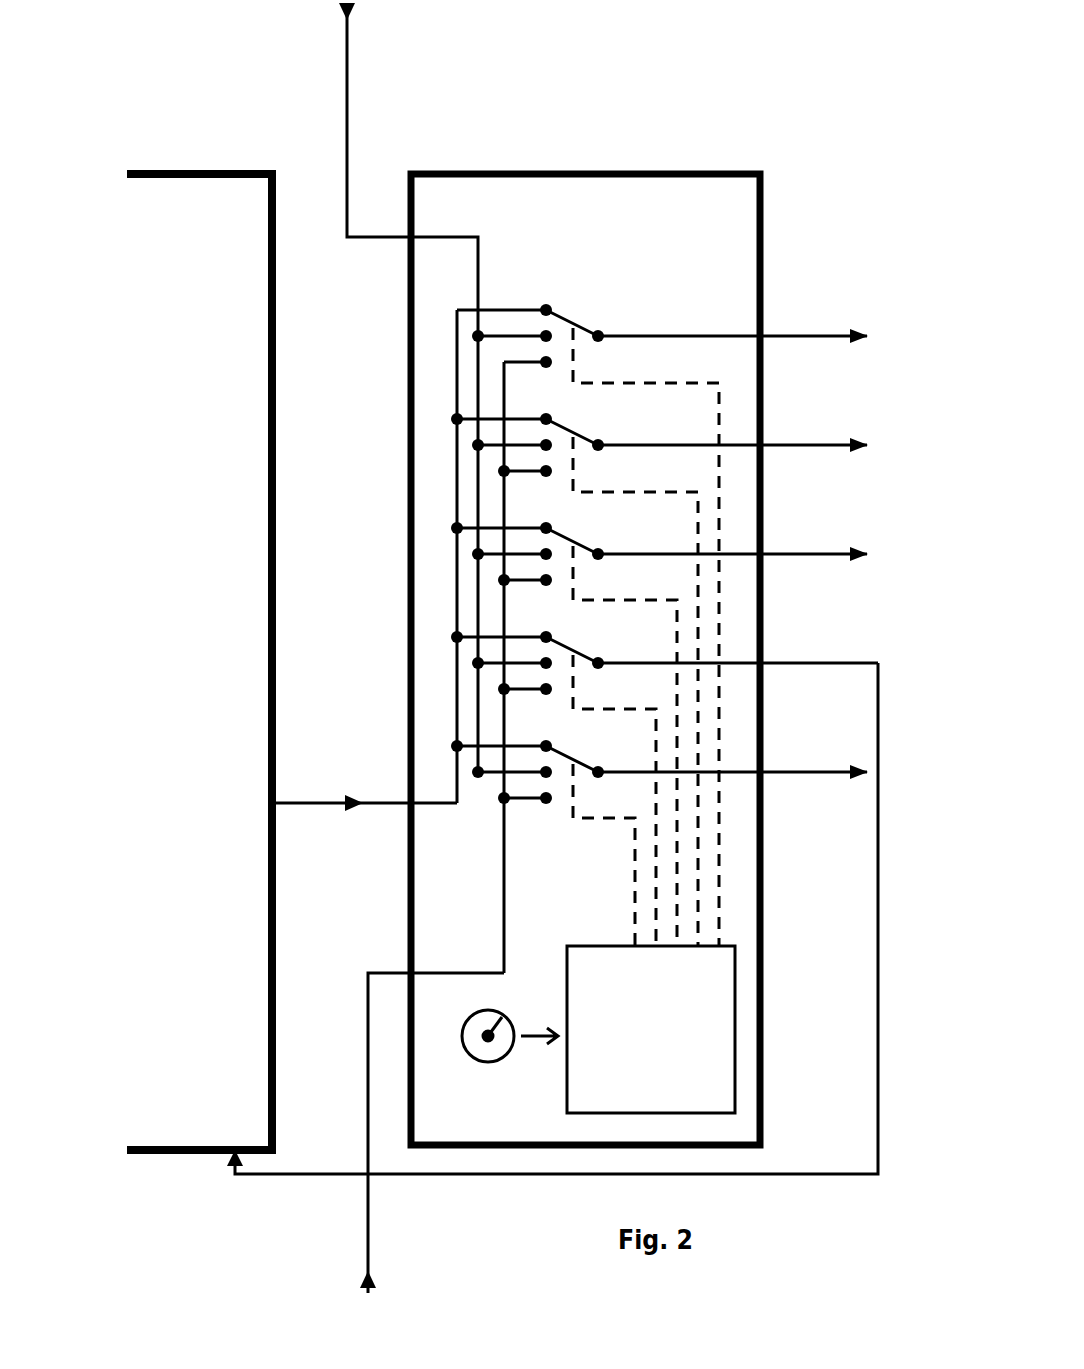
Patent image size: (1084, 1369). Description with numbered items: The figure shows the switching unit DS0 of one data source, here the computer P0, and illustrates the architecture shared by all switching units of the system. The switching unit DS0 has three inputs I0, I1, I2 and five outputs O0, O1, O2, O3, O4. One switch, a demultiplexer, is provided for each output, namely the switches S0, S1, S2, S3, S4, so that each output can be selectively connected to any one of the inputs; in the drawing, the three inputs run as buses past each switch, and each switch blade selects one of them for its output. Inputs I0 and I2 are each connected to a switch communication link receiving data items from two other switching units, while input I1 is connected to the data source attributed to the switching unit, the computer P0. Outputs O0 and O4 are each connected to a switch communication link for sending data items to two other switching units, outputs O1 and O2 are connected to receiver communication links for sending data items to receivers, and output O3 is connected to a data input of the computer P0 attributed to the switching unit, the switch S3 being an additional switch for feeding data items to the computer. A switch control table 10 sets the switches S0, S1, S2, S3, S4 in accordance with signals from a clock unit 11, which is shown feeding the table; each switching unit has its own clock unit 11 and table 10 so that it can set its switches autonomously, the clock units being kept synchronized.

The switch control table 10 is at (681, 1098).
The clock unit 11 is at (495, 1058).
The computer P0 is at (199, 662).
The data source switching unit DS0 is at (585, 659).
The input I0 is at (408, 387).
The input I1 is at (364, 560).
The input I2 is at (432, 827).
The switch S0 is at (588, 616).
The switch S1 is at (574, 676).
The switch S2 is at (564, 730).
The switch S3 is at (553, 785).
The switch S4 is at (543, 839).
The output O0 is at (760, 337).
The output O1 is at (760, 446).
The output O2 is at (760, 555).
The output O3 is at (760, 664).
The output O4 is at (760, 773).